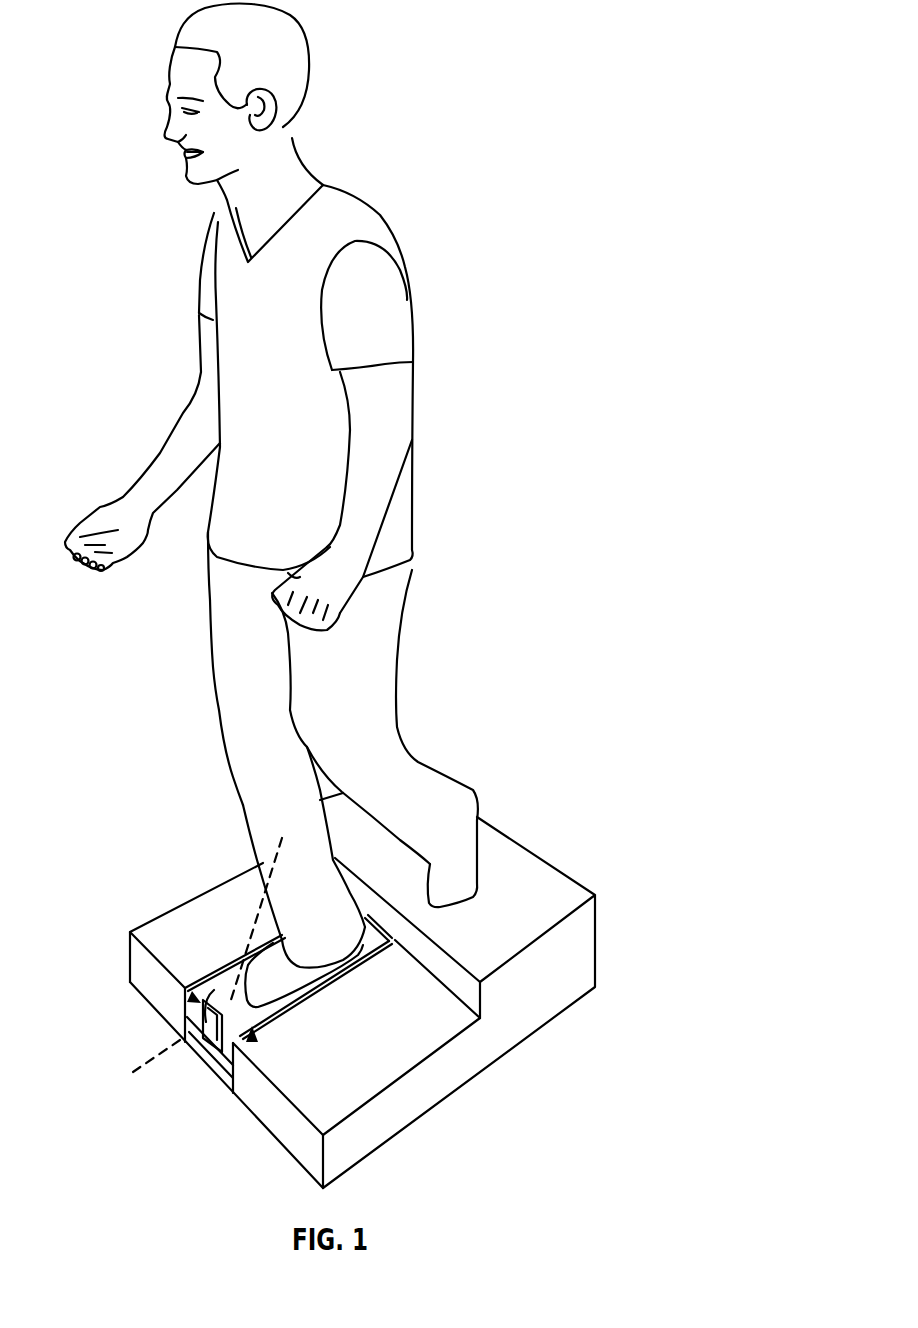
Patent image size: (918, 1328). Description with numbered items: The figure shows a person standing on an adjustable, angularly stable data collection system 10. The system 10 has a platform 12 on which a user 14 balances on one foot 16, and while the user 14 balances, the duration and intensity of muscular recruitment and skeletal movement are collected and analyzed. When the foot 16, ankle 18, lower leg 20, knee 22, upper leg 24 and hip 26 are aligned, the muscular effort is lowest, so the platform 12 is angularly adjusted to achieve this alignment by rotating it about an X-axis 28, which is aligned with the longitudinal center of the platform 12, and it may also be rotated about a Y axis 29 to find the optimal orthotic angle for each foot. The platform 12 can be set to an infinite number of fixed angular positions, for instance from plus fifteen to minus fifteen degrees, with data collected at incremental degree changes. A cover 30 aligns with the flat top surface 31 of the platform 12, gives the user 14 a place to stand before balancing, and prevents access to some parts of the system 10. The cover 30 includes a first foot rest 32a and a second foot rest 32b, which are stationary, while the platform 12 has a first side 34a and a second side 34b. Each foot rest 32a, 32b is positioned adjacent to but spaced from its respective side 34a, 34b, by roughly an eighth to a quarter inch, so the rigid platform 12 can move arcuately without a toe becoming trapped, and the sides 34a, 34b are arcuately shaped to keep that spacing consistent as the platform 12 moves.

The angularly stable data collection system 10 is at (438, 140).
The platform 12 is at (192, 1005).
The user 14 is at (403, 294).
The foot 16 is at (153, 944).
The ankle 18 is at (312, 913).
The lower leg 20 is at (268, 833).
The knee 22 is at (230, 763).
The upper leg 24 is at (217, 687).
The hip 26 is at (207, 542).
The X-axis 28 is at (180, 1040).
The Y axis 29 is at (250, 932).
The cover 30 is at (542, 857).
The top surface 31 is at (390, 942).
The first foot rest 32a is at (128, 940).
The second foot rest 32b is at (370, 1087).
The first side 34a is at (185, 993).
The second side 34b is at (252, 1038).